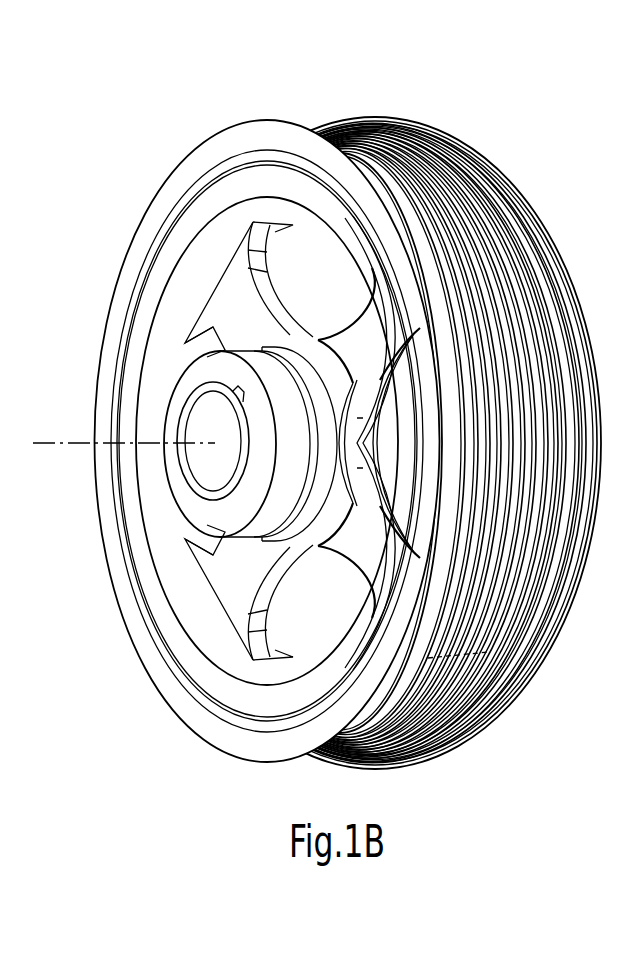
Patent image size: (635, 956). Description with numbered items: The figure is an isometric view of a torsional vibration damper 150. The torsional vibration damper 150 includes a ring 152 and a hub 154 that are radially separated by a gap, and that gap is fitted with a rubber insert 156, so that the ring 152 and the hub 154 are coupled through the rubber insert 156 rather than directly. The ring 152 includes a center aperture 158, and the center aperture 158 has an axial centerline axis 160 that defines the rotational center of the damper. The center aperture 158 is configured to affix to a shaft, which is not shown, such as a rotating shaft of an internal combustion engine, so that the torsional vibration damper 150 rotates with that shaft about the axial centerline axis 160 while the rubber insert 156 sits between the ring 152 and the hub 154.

The torsional vibration damper 150 is at (198, 118).
The ring 152 is at (210, 637).
The hub 154 is at (560, 578).
The rubber insert 156 is at (190, 201).
The center aperture 158 is at (210, 413).
The axial centerline axis 160 is at (55, 457).